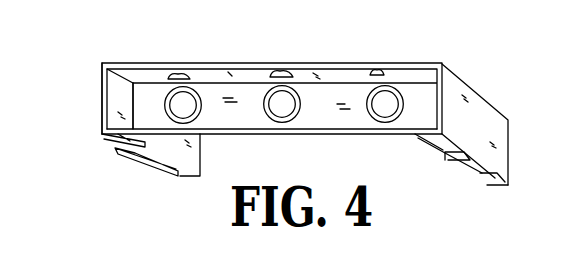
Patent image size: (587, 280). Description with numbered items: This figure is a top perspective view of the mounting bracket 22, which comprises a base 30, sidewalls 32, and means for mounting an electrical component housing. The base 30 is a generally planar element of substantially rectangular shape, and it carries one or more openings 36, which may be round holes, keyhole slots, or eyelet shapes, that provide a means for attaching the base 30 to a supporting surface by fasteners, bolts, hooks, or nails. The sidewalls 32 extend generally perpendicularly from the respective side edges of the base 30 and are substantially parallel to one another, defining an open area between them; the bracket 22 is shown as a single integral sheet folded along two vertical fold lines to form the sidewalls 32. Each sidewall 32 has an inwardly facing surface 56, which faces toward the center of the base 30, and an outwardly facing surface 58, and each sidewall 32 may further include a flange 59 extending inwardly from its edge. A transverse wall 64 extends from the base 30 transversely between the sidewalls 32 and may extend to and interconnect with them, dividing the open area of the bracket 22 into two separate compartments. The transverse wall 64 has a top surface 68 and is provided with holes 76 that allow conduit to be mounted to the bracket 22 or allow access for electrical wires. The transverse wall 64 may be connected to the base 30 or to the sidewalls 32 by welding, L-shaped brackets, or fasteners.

The bracket 22 is at (481, 69).
The base 30 is at (333, 74).
The sidewalls 32 is at (100, 114).
The openings 36 is at (193, 74).
The inwardly facing surface 56 is at (116, 108).
The outwardly facing surface 58 is at (455, 77).
The flange 59 is at (462, 163).
The transverse wall 64 is at (249, 143).
The top surface 68 is at (331, 118).
The holes 76 is at (288, 107).